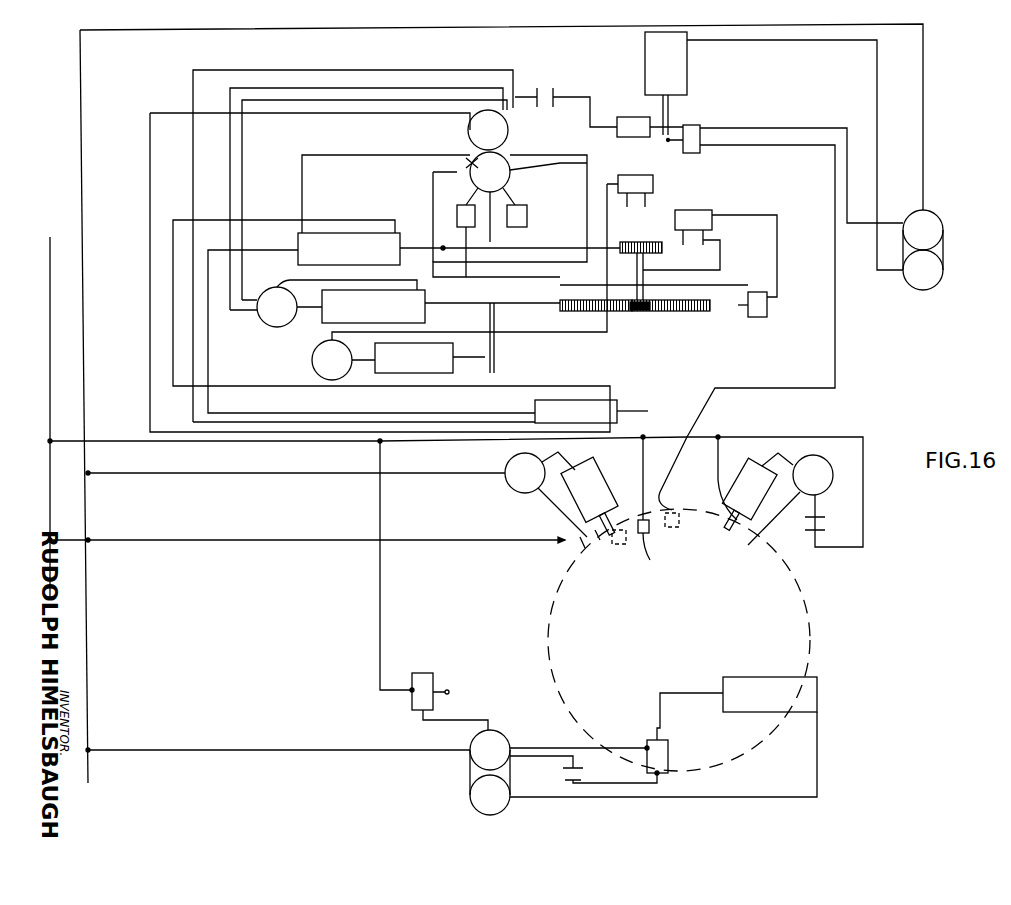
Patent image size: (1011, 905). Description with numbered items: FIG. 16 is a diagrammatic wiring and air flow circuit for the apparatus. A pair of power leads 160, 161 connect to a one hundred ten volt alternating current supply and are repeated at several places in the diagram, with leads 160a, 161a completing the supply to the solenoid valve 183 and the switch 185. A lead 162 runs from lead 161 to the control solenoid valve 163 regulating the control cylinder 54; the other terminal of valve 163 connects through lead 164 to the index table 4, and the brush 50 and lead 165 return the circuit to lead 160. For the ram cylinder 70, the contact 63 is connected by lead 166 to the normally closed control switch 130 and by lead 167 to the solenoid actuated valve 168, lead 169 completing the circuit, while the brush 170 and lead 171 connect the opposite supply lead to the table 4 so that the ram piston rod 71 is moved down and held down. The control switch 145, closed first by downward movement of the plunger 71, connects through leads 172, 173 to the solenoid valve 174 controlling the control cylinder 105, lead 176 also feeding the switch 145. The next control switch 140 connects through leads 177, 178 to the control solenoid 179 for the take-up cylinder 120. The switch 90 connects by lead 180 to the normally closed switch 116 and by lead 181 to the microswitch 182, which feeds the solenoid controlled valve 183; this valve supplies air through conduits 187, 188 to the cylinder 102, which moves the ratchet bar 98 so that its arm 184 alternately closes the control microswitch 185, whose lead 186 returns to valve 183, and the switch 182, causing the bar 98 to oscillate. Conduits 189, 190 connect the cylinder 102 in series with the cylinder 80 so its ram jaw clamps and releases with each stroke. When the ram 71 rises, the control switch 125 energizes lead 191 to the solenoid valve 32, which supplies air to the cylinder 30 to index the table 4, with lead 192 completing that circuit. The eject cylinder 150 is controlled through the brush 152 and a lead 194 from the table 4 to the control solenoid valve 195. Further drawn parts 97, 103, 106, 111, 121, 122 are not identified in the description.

The index table 4 is at (808, 640).
The cylinder 30 is at (817, 690).
The solenoid valve 32 is at (470, 742).
The brush 50 is at (578, 542).
The control cylinder 54 is at (590, 473).
The contact 63 is at (668, 500).
The ram cylinder 70 is at (687, 85).
The ram piston rod 71 is at (670, 115).
The cylinder 80 is at (590, 406).
The switch 90 is at (700, 212).
The gear 97 is at (630, 242).
The ratchet bar 98 is at (553, 250).
The control cylinder 102 is at (298, 243).
The rod 103 is at (440, 268).
The control cylinder 105 is at (322, 315).
The rod 106 is at (432, 305).
The rack 111 is at (640, 311).
The normally closed switch 116 is at (760, 317).
The take-up cylinder 120 is at (415, 373).
The rod 121 is at (485, 360).
The rod 122 is at (494, 368).
The control switch 125 is at (412, 700).
The normally closed control switch 130 is at (700, 148).
The control switch 140 is at (653, 183).
The control switch 145 is at (632, 117).
The eject cylinder 150 is at (752, 475).
The brush 152 is at (705, 515).
The power lead 160 is at (537, 92).
The power lead 161 is at (88, 360).
The lead 160a is at (580, 165).
The lead 161a is at (525, 205).
The lead 162 is at (245, 475).
The control solenoid valve 163 is at (505, 478).
The lead 164 is at (560, 510).
The lead 165 is at (275, 542).
The lead 166 is at (837, 322).
The lead 167 is at (830, 128).
The solenoid actuated valve 168 is at (943, 225).
The lead 169 is at (923, 115).
The brush 170 is at (652, 510).
The lead 171 is at (425, 443).
The lead 172 is at (215, 148).
The lead 173 is at (250, 152).
The solenoid valve 174 is at (262, 322).
The lead 176 is at (592, 135).
The lead 177 is at (525, 335).
The lead 178 is at (590, 335).
The control solenoid 179 is at (312, 362).
The lead 180 is at (835, 235).
The lead 181 is at (748, 287).
The microswitch 182 is at (462, 203).
The solenoid controlled valve 183 is at (466, 160).
The arm 184 is at (492, 230).
The control microswitch 185 is at (527, 220).
The lead 186 is at (520, 188).
The conduit 187 is at (380, 150).
The conduit 188 is at (520, 150).
The conduit 189 is at (240, 258).
The conduit 190 is at (330, 220).
The lead 191 is at (382, 607).
The lead 192 is at (262, 752).
The lead 194 is at (770, 535).
The control solenoid valve 195 is at (822, 457).